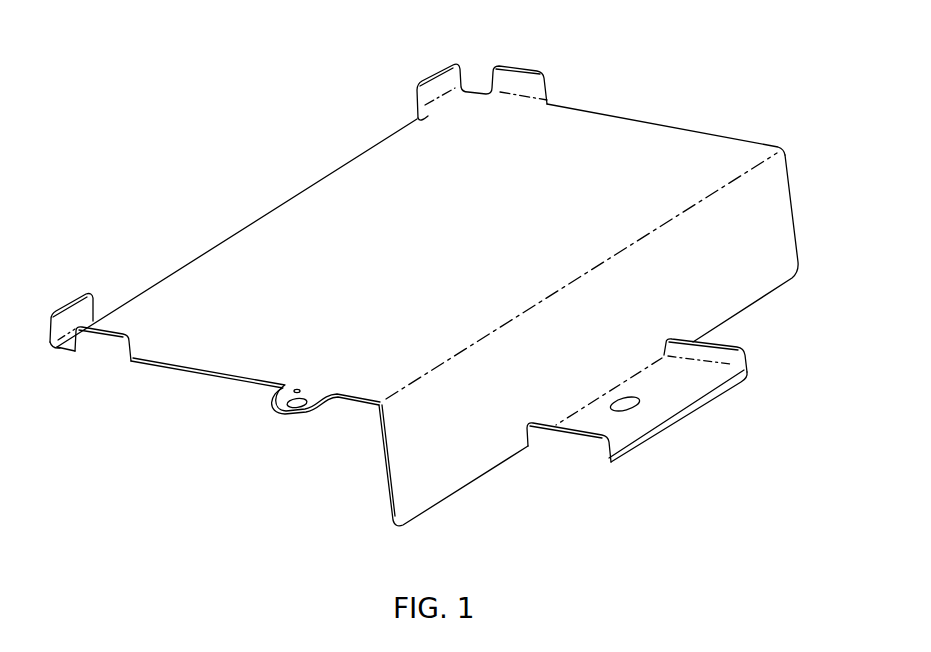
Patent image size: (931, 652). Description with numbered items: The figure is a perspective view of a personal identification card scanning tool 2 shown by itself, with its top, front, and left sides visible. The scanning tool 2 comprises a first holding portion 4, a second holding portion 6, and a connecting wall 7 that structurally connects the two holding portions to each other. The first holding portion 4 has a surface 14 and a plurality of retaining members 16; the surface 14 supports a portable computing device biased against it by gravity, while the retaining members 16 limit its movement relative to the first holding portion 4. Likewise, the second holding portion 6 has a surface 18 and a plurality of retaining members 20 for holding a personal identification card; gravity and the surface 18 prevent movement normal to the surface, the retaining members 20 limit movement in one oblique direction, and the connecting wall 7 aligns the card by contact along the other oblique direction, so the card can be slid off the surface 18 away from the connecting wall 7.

The scanning tool 2 is at (247, 112).
The first holding portion 4 is at (298, 262).
The second holding portion 6 is at (666, 410).
The connecting wall 7 is at (772, 227).
The surface 14 is at (610, 153).
The retaining members 16 is at (430, 82).
The surface 18 is at (623, 425).
The retaining members 20 is at (738, 359).